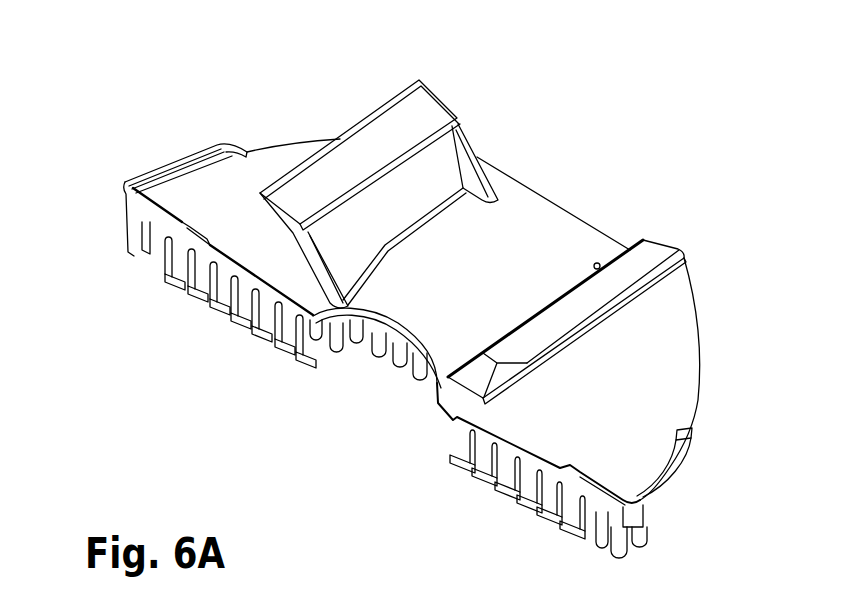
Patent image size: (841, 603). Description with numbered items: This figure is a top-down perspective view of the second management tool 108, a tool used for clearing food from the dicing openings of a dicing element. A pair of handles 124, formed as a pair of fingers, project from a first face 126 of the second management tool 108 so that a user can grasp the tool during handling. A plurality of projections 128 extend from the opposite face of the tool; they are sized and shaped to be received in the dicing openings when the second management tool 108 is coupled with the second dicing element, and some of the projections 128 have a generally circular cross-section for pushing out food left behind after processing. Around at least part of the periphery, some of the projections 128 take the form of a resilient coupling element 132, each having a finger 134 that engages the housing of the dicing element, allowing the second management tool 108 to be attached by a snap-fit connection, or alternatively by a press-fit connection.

The second management tool 108 is at (127, 139).
The handles 124 is at (433, 118).
The first face 126 is at (667, 415).
The projections 128 is at (400, 353).
The resilient coupling element 132 is at (203, 275).
The finger 134 is at (215, 312).